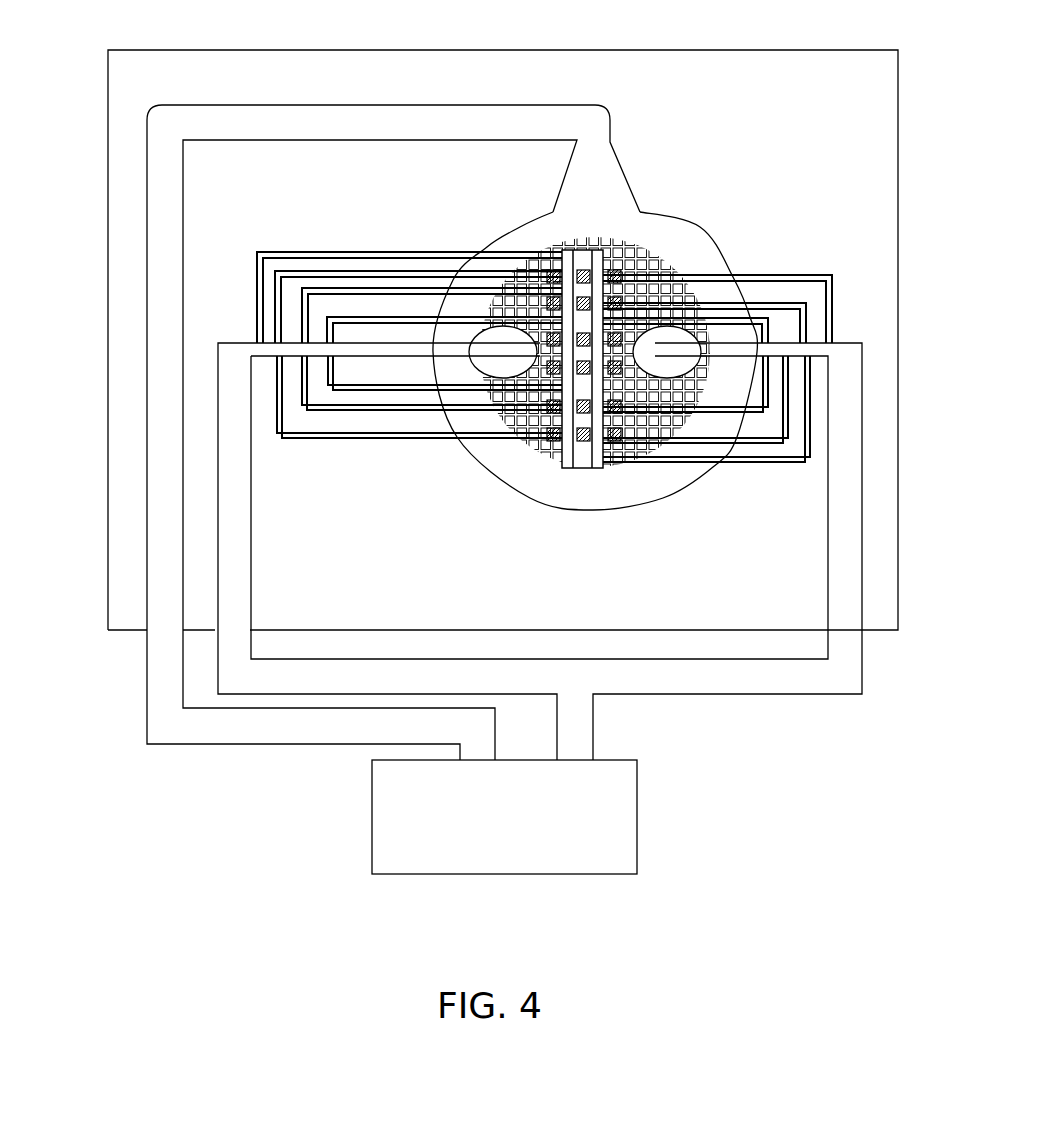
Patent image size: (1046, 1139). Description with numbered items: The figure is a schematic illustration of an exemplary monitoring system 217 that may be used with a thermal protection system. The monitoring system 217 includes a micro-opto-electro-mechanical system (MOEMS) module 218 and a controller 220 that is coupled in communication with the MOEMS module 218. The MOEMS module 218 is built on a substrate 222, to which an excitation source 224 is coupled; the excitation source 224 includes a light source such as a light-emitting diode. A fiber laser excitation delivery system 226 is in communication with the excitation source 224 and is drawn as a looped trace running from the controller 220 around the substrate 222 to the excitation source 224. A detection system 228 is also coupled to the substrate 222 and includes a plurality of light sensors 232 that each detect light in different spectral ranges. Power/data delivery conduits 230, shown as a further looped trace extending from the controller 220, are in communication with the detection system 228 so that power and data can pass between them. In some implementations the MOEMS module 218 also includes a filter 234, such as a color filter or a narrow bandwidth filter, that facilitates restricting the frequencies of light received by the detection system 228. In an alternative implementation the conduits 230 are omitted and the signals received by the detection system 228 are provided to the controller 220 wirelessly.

The monitoring system 217 is at (153, 797).
The micro-opto-electro-mechanical system (MOEMS) module 218 is at (93, 94).
The controller 220 is at (637, 797).
The substrate 222 is at (865, 100).
The excitation source 224 is at (683, 255).
The fiber laser excitation delivery system 226 is at (395, 118).
The detection system 228 is at (603, 480).
The power/data delivery conduits 230 is at (238, 562).
The light sensors 232 is at (571, 236).
The filter 234 is at (547, 449).